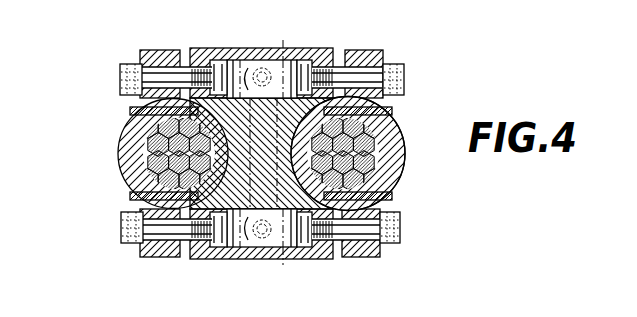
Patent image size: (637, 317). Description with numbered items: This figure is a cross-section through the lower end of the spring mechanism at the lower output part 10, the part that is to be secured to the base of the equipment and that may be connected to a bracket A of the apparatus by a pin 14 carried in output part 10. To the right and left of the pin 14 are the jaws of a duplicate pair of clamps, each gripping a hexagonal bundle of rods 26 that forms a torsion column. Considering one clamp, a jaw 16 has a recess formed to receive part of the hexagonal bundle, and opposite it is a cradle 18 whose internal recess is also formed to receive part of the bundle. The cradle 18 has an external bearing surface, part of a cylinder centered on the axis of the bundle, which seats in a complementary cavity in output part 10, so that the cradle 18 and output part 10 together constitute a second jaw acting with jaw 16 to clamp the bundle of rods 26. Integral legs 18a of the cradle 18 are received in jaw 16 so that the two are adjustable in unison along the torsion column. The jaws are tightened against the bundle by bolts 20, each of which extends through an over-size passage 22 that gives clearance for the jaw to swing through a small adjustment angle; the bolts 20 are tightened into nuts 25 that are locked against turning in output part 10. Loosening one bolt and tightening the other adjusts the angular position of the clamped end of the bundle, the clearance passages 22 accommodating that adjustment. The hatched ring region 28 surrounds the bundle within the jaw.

The lower output part 10 is at (305, 48).
The pin 14 is at (243, 48).
The jaw 16 is at (118, 152).
The cradle 18 is at (291, 128).
The integral legs 18a is at (132, 110).
The bolts 20 is at (122, 67).
The over-size passage 22 is at (190, 68).
The nuts 25 is at (219, 62).
The bundle of rods 26 is at (157, 160).
The insulating ring 28 is at (400, 138).
The bracket A is at (283, 48).